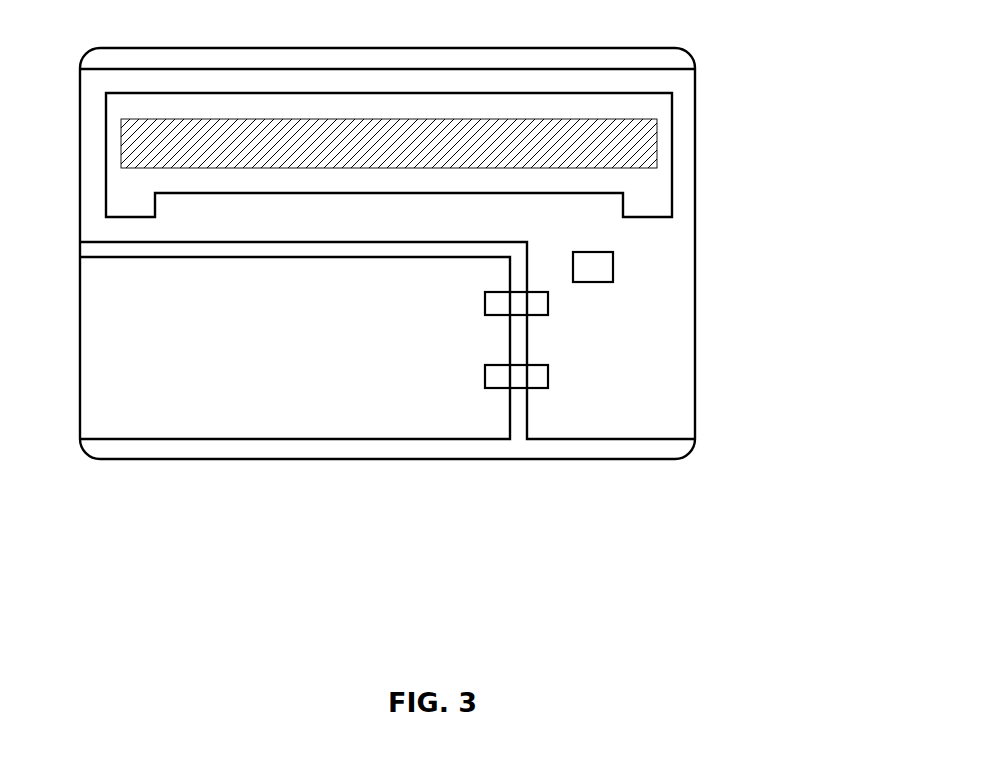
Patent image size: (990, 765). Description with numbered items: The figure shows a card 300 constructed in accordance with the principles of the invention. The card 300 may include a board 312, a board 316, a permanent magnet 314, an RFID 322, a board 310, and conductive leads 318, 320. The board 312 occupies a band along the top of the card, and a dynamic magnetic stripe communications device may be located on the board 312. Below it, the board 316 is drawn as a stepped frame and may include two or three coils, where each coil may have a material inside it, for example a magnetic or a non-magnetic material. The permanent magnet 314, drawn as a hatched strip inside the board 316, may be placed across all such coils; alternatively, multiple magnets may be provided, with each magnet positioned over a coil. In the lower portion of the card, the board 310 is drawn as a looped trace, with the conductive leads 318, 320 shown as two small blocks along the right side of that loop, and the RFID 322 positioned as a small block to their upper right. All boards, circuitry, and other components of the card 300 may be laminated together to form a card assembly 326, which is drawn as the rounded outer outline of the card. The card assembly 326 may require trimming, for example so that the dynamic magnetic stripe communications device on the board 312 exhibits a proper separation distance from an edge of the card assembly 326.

The card 300 is at (934, 258).
The board 310 is at (92, 285).
The board 312 is at (478, 69).
The permanent magnet 314 is at (285, 119).
The board 316 is at (328, 93).
The conductive lead 318 is at (485, 298).
The conductive lead 320 is at (485, 371).
The RFID 322 is at (577, 252).
The card assembly 326 is at (336, 48).